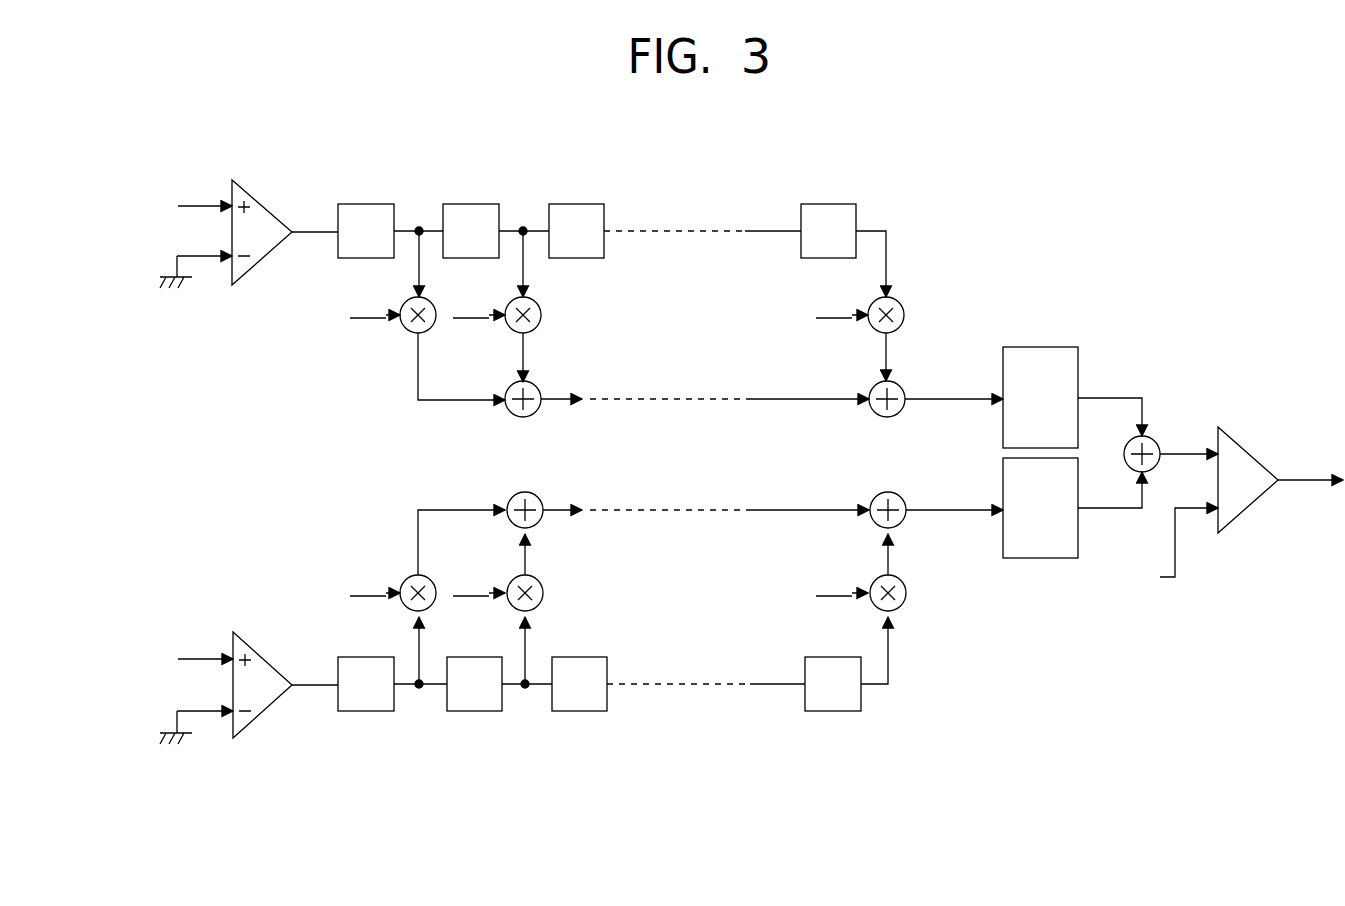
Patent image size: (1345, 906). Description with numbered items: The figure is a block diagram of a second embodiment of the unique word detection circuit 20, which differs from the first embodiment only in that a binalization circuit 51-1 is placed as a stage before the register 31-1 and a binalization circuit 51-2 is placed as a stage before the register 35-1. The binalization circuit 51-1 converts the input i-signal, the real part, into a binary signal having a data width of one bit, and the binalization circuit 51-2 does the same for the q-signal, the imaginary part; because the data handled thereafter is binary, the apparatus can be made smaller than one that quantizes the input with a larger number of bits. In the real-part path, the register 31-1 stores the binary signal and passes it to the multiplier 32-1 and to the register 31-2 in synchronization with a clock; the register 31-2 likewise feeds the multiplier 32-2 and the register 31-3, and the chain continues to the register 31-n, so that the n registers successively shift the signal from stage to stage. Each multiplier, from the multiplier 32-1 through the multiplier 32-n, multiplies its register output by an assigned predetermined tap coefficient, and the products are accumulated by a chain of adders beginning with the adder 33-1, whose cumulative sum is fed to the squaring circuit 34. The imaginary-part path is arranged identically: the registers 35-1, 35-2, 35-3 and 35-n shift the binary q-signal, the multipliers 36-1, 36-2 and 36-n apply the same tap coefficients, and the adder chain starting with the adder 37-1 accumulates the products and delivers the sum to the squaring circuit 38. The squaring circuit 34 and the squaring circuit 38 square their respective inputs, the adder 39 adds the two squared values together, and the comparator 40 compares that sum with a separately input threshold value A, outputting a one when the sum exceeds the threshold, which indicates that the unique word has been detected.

The unique word detection circuit 20 is at (694, 730).
The binalization circuit 51-1 is at (257, 197).
The binalization circuit 51-2 is at (256, 650).
The register 31-1 is at (365, 203).
The register 31-2 is at (470, 203).
The register 31-3 is at (574, 203).
The register 31-n is at (823, 203).
The multiplier 32-1 is at (407, 331).
The multiplier 32-2 is at (541, 311).
The multiplier 32-n is at (903, 307).
The adder 33-1 is at (520, 419).
The squaring circuit 34 is at (1038, 346).
The register 35-1 is at (364, 712).
The register 35-2 is at (472, 712).
The register 35-3 is at (576, 712).
The register 35-n is at (830, 712).
The multiplier 36-1 is at (405, 612).
The multiplier 36-2 is at (543, 593).
The multiplier 36-n is at (906, 585).
The adder 37-1 is at (542, 497).
The squaring circuit 38 is at (1045, 559).
The adder 39 is at (1158, 440).
The comparator 40 is at (1248, 452).